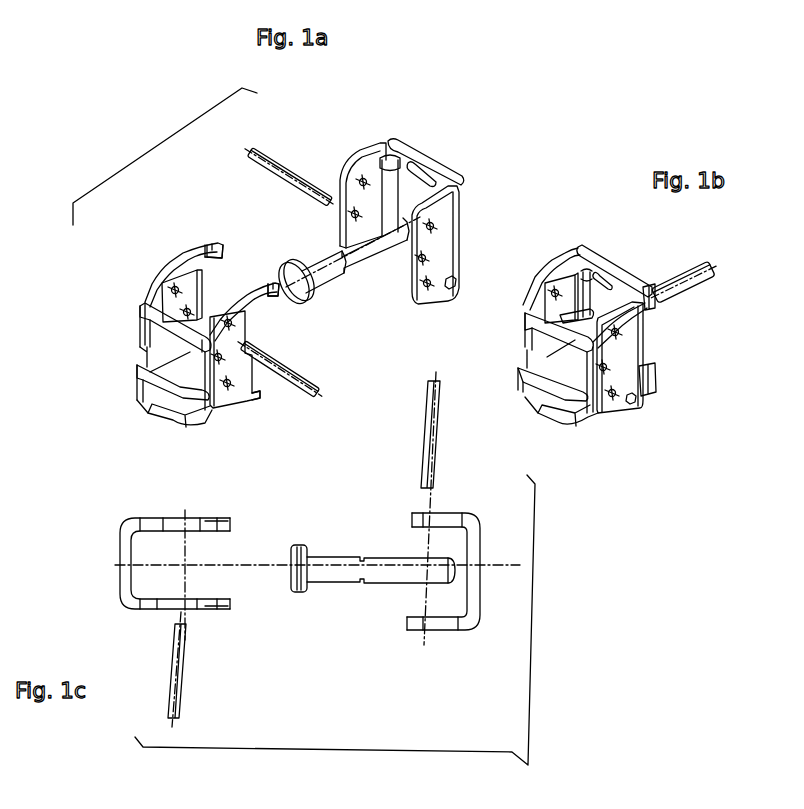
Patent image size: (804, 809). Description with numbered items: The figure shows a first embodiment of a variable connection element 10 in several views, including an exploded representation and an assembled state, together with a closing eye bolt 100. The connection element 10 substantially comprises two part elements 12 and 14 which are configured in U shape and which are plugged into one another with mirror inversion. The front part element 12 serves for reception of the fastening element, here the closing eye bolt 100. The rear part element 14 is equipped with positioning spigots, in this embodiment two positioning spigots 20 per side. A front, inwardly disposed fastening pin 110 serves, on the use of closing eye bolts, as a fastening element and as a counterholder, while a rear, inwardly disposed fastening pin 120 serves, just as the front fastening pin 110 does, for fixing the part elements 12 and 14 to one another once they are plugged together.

In FIG. 1A, the variable connection element 10 is at (150, 152).
In FIG. 1B, the variable connection element 10 is at (709, 366).
In FIG. 1C, the variable connection element 10 is at (341, 634).
In FIG. 1A, the front part element 12 is at (437, 161).
In FIG. 1B, the front part element 12 is at (623, 268).
In FIG. 1C, the front part element 12 is at (479, 549).
In FIG. 1A, the rear part element 14 is at (158, 398).
In FIG. 1B, the rear part element 14 is at (543, 402).
In FIG. 1C, the rear part element 14 is at (122, 597).
In FIG. 1A, the positioning spigots 20 is at (212, 252).
In FIG. 1B, the positioning spigots 20 is at (657, 308).
In FIG. 1C, the positioning spigots 20 is at (223, 524).
In FIG. 1A, the closing eye bolt 100 is at (327, 270).
In FIG. 1B, the closing eye bolt 100 is at (708, 280).
In FIG. 1C, the closing eye bolt 100 is at (330, 574).
In FIG. 1A, the front, inwardly disposed fastening pin 110 is at (276, 166).
In FIG. 1C, the front, inwardly disposed fastening pin 110 is at (432, 471).
In FIG. 1A, the rear, inwardly disposed fastening pin 120 is at (302, 396).
In FIG. 1C, the rear, inwardly disposed fastening pin 120 is at (182, 693).